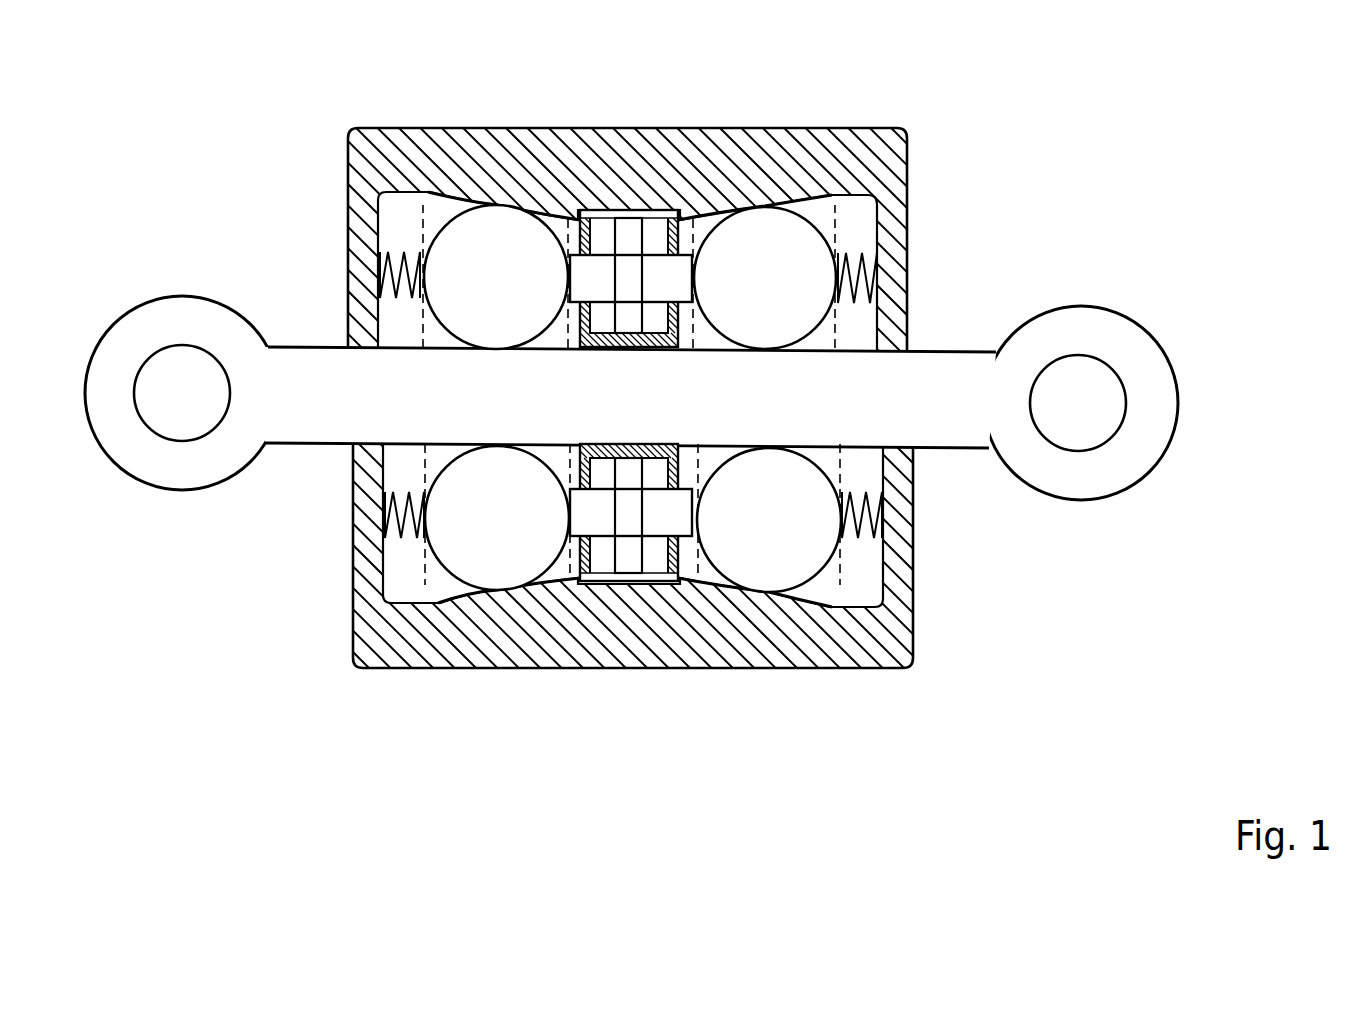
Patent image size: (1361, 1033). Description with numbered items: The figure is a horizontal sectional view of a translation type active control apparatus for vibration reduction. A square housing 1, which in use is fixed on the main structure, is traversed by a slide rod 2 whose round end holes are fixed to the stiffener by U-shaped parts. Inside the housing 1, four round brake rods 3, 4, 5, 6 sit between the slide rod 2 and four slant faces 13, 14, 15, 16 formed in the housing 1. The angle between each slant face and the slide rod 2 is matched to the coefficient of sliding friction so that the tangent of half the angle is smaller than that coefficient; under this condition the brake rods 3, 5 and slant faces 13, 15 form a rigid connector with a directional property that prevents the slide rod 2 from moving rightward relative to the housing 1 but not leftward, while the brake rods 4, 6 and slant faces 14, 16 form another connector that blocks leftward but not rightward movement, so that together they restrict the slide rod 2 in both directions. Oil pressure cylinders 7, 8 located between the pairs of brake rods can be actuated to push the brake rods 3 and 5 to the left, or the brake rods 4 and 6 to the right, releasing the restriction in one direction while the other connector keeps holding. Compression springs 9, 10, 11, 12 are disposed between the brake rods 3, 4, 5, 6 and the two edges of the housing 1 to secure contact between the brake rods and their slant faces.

The housing 1 is at (708, 128).
The slide rod 2 is at (961, 352).
The brake rod 3 is at (458, 208).
The brake rod 4 is at (815, 205).
The brake rod 5 is at (458, 578).
The brake rod 6 is at (822, 607).
The oil pressure cylinder 7 is at (650, 210).
The oil pressure cylinder 8 is at (660, 582).
The compression spring 9 is at (402, 250).
The compression spring 10 is at (863, 260).
The compression spring 11 is at (402, 548).
The compression spring 12 is at (868, 553).
The slant face 13 is at (455, 198).
The slant face 14 is at (785, 200).
The slant face 15 is at (487, 595).
The slant face 16 is at (787, 598).